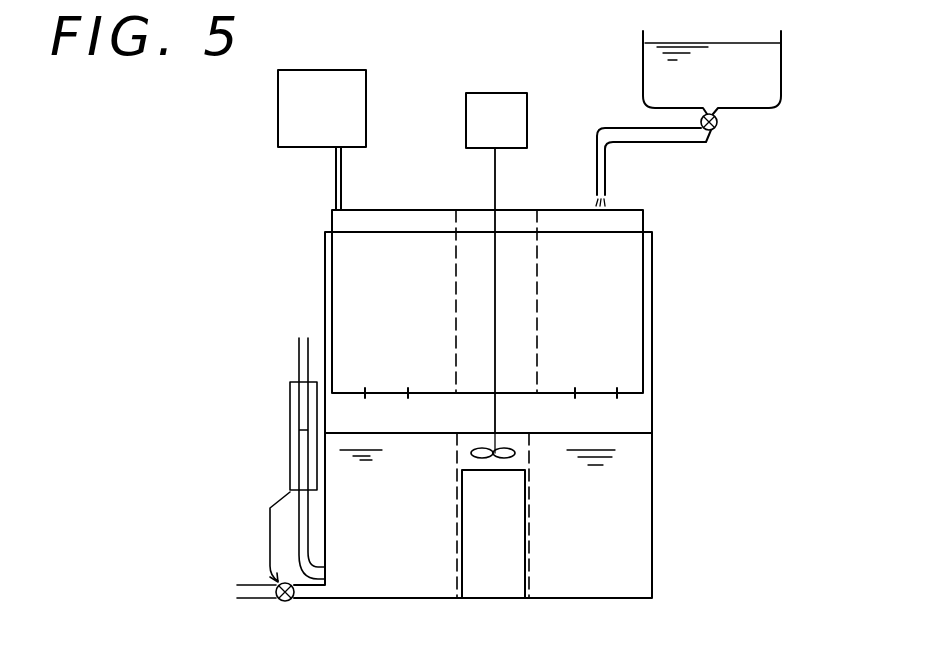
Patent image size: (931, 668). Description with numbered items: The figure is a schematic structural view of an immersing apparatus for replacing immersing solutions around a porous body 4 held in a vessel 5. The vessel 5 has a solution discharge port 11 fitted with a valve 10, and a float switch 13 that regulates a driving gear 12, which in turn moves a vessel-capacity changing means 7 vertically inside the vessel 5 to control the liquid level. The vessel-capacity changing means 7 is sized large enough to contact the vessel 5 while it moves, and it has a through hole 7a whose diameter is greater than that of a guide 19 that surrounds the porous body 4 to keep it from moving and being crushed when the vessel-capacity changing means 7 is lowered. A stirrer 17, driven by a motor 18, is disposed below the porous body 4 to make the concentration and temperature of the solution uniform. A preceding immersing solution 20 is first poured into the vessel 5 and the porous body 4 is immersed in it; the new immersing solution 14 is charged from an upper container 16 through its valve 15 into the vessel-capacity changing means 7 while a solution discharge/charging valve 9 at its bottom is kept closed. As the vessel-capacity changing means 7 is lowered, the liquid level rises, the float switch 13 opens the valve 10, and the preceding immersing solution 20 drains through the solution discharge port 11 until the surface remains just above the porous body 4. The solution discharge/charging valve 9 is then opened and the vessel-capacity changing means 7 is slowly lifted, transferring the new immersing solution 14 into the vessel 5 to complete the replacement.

The porous body 4 is at (490, 588).
The vessel 5 is at (650, 420).
The vessel-capacity changing means 7 is at (640, 222).
The through hole 7a is at (538, 238).
The solution discharge/charging valve 9 is at (596, 392).
The valve 10 is at (293, 605).
The solution discharge port 11 is at (255, 594).
The driving gear 12 is at (343, 83).
The float switch 13 is at (292, 438).
The Nth immersing solution 14 is at (660, 70).
The valve 15 is at (717, 126).
The upper container 16 is at (788, 62).
The stirrer 17 is at (508, 446).
The motor 18 is at (502, 95).
The guide 19 is at (530, 553).
The (N-1)th immersing solution 20 is at (615, 528).